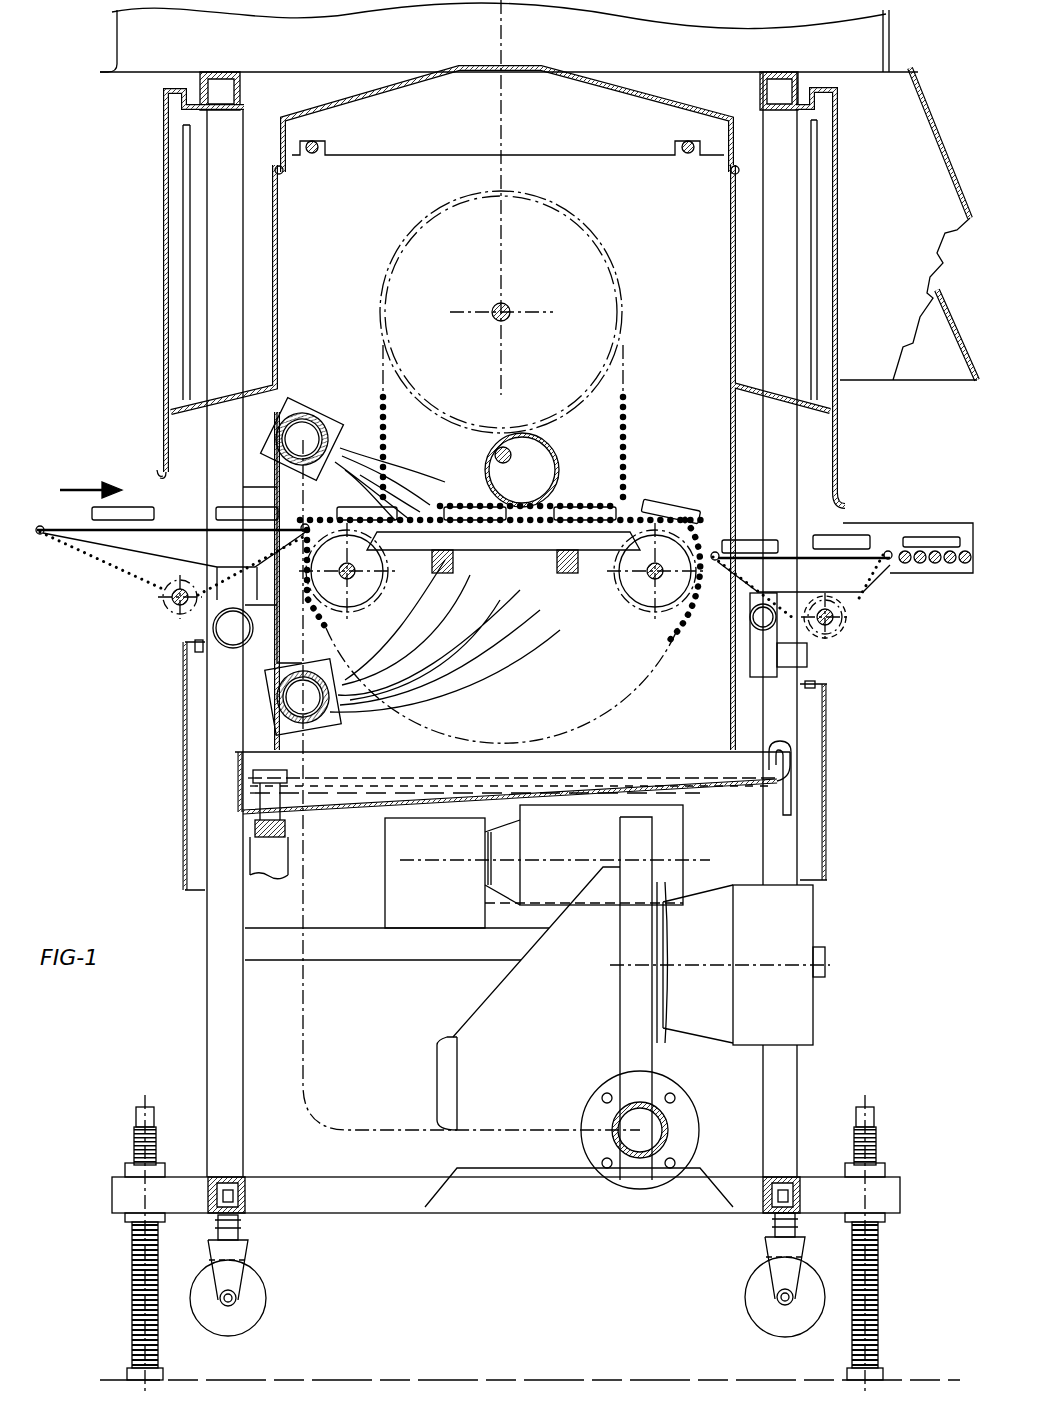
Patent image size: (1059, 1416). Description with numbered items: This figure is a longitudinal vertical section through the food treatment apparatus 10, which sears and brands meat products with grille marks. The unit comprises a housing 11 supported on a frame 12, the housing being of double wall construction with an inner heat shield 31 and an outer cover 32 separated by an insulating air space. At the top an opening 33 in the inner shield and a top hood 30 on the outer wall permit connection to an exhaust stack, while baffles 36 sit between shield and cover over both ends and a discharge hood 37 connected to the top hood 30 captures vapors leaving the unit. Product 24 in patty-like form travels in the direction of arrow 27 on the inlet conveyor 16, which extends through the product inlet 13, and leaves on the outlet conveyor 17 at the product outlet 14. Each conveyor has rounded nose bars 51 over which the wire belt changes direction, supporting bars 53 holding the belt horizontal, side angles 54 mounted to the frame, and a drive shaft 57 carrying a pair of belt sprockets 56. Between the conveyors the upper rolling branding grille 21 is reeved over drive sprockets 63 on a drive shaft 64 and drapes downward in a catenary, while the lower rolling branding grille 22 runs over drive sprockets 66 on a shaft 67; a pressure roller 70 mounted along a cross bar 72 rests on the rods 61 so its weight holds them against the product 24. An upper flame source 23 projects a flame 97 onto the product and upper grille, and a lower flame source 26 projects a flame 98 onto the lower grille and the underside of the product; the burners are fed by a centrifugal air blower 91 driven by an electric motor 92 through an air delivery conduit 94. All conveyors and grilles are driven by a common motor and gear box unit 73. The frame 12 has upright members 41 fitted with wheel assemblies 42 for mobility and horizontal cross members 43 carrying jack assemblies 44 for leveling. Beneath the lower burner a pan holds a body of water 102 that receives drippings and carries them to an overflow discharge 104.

The apparatus 10 is at (205, 38).
The housing 11 is at (162, 135).
The frame 12 is at (215, 200).
The product inlet 13 is at (160, 470).
The product outlet 14 is at (850, 522).
The feed or inlet conveyor 16 is at (135, 594).
The discharge or outlet conveyor 17 is at (870, 594).
The upper rolling branding grille 21 is at (628, 408).
The lower rolling branding grille 22 is at (678, 652).
The upper flame source 23 is at (333, 415).
The product 24 is at (100, 507).
The lower flame source 26 is at (345, 712).
The arrow 27 is at (112, 480).
The top hood 30 is at (890, 38).
The inner heat shield 31 is at (730, 225).
The outer cover 32 is at (820, 230).
The opening 33 is at (525, 70).
The baffles 36 is at (235, 400).
The discharge hood 37 is at (932, 122).
The upright members 41 is at (207, 1005).
The wheel assemblies 42 is at (266, 1290).
The horizontal cross members 43 is at (330, 1178).
The jack assemblies 44 is at (132, 1290).
The nose bars 51 is at (40, 535).
The supporting bars 53 is at (175, 535).
The side angles 54 is at (125, 580).
The sprockets 56 is at (182, 612).
The drive shaft 57 is at (178, 600).
The rods 61 is at (620, 460).
The drive sprockets 63 is at (554, 254).
The drive shaft 64 is at (510, 312).
The drive sprockets 66 is at (372, 582).
The shaft 67 is at (370, 595).
The pressure roller 70 is at (545, 455).
The cross bar 72 is at (503, 456).
The motor and gear box unit 73 is at (402, 882).
The centrifugal air blower 91 is at (566, 1024).
The electric motor 92 is at (800, 925).
The air delivery conduit 94 is at (668, 1115).
The flame 97 is at (425, 495).
The flame 98 is at (480, 620).
The body of water 102 is at (350, 798).
The overflow discharge 104 is at (255, 780).